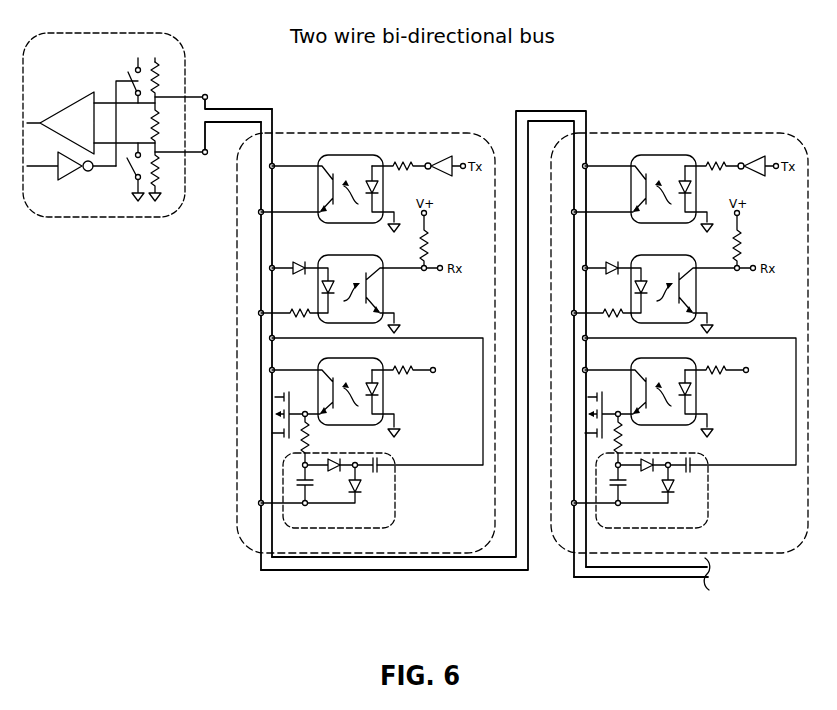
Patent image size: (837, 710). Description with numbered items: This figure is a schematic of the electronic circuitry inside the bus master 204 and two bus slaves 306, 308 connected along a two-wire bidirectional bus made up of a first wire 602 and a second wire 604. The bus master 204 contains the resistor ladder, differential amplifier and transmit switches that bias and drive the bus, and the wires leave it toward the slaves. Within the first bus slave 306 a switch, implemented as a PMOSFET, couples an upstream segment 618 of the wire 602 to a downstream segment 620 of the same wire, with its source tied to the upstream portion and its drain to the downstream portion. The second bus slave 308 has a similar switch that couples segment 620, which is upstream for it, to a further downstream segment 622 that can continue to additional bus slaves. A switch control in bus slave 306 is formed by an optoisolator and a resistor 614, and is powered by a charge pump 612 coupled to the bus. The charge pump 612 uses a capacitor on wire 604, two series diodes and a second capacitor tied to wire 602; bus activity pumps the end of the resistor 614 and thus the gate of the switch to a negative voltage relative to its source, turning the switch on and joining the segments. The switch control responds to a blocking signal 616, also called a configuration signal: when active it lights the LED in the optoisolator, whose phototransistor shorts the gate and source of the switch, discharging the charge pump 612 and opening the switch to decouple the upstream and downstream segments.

The bus master 204 is at (103, 217).
The wire of the two-wire bidirectional bus 602 is at (225, 108).
The wire of the two-wire bidirectional bus 604 is at (237, 123).
The upstream segment 618 is at (290, 92).
The downstream segment 620 is at (558, 110).
The downstream segment 622 is at (627, 578).
The bus slave 306 is at (366, 313).
The bus slave 308 is at (678, 132).
The charge pump 612 is at (395, 508).
The resistor 614 is at (312, 445).
The blocking signal 616 is at (434, 373).